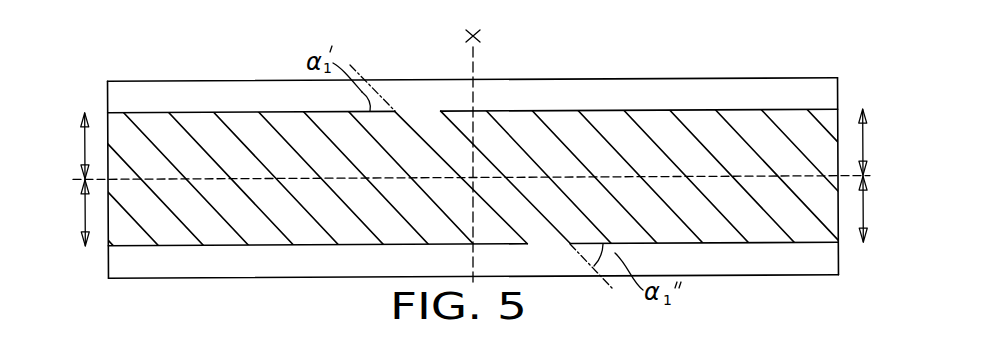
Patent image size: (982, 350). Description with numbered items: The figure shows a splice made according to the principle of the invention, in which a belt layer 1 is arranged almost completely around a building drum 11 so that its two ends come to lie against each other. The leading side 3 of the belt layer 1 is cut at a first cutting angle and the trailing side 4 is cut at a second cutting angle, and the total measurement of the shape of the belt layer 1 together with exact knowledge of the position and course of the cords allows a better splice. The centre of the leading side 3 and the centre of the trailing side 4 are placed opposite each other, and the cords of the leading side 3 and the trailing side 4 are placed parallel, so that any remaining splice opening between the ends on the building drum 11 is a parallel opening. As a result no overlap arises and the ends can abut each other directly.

The belt layer 1 is at (491, 163).
The leading side 3 is at (415, 126).
The trailing side 4 is at (553, 223).
The building drum 11 is at (805, 90).